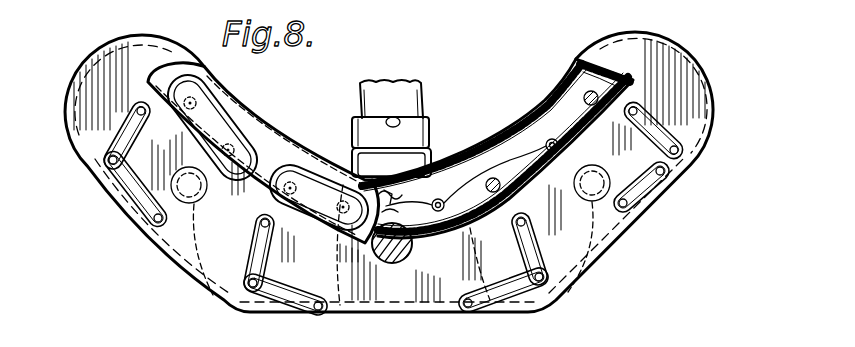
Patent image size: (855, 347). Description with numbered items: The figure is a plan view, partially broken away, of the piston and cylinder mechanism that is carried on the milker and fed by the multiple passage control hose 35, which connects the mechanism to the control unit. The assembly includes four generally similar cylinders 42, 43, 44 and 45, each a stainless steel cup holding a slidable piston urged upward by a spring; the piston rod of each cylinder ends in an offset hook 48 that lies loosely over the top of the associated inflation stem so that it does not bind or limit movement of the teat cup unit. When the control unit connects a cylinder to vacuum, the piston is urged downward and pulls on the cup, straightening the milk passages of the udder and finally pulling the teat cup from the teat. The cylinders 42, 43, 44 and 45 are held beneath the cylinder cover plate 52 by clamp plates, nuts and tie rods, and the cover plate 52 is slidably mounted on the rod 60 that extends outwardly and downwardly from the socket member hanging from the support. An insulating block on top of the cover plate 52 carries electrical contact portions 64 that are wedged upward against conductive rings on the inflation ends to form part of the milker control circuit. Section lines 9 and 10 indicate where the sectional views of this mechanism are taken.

The section line 9- 9 is at (279, 110).
The section line 10- 10 is at (177, 53).
The multiple passage control hose 35 is at (423, 106).
The cylinder 42 is at (67, 123).
The cylinder 43 is at (342, 310).
The cylinder 44 is at (608, 242).
The cylinder 45 is at (707, 118).
The offset hook 48 is at (133, 193).
The cylinder cover plate 52 is at (688, 75).
The rod 60 is at (392, 264).
The electrical contact portions 64 is at (213, 122).